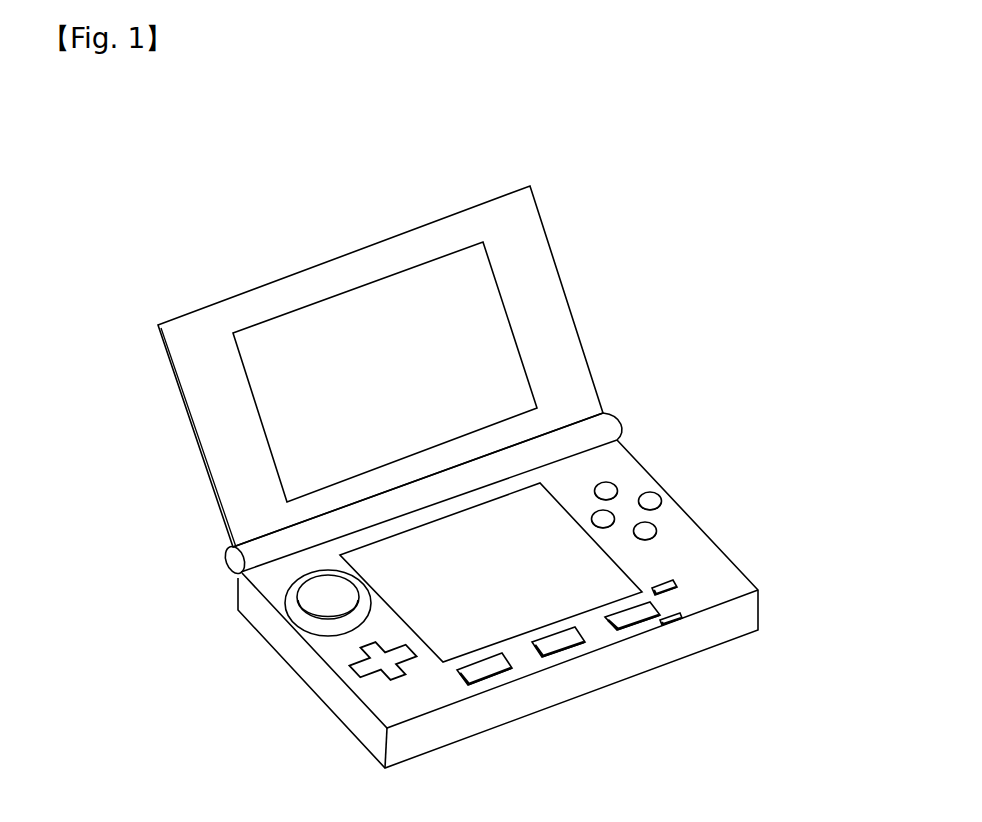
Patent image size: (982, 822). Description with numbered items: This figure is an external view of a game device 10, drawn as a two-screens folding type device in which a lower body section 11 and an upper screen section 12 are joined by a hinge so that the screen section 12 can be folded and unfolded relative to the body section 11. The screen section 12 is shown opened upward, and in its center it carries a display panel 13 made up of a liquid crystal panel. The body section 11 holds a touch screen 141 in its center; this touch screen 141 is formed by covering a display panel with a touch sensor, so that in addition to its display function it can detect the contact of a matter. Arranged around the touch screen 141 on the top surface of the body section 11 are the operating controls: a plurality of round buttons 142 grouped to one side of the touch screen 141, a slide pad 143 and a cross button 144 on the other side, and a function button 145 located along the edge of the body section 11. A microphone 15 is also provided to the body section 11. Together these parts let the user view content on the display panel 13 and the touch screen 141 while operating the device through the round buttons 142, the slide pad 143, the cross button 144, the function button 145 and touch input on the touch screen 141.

The game device 10 is at (487, 180).
The body section 11 is at (717, 536).
The screen section 12 is at (571, 307).
The display panel 13 is at (358, 287).
The microphone 15 is at (668, 626).
The touch screen 141 is at (607, 413).
The round buttons 142 is at (602, 508).
The slide pad 143 is at (293, 603).
The cross button 144 is at (356, 666).
The function button 145 is at (492, 677).